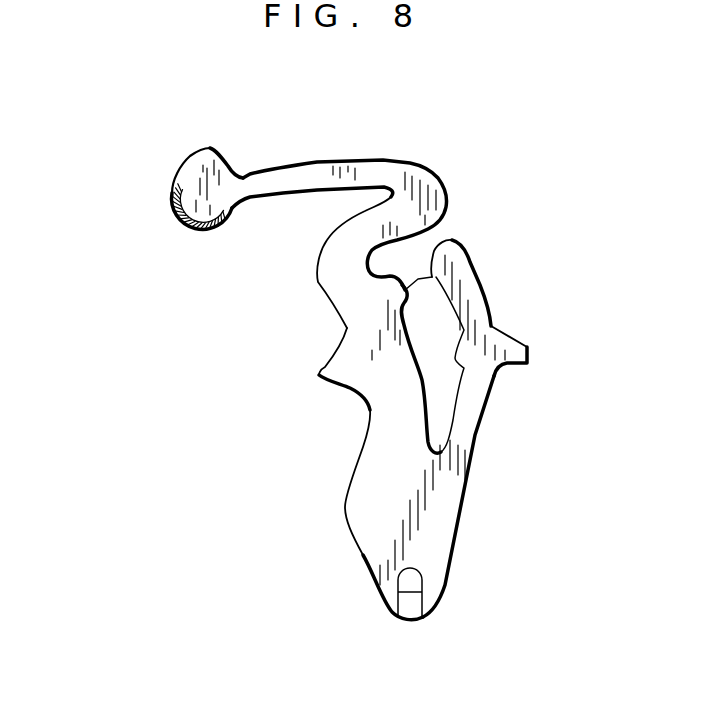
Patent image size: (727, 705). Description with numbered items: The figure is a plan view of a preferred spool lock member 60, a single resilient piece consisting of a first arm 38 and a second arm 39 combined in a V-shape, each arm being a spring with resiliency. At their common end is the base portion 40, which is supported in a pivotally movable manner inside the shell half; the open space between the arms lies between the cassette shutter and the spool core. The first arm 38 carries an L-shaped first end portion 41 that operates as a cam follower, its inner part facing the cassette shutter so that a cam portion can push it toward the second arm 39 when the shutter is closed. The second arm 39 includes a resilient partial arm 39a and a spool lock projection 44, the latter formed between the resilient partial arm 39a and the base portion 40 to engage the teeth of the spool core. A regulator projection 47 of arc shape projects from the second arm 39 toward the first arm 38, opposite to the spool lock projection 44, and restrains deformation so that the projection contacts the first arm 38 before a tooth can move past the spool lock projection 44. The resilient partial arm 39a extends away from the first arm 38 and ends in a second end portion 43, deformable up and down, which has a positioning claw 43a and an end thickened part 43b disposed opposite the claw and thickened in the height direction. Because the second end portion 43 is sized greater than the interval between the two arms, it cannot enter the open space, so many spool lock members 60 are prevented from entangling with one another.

The first arm 38 is at (482, 400).
The second arm 39 is at (330, 293).
The resilient partial arm 39a is at (321, 161).
The base portion 40 is at (415, 596).
The first end portion 41 is at (517, 330).
The second end portion 43 is at (168, 183).
The positioning claw 43a is at (210, 148).
The end thickened part 43b is at (201, 233).
The spool lock projection 44 is at (318, 372).
The regulator projection 47 is at (437, 275).
The spool lock member 60 is at (345, 531).